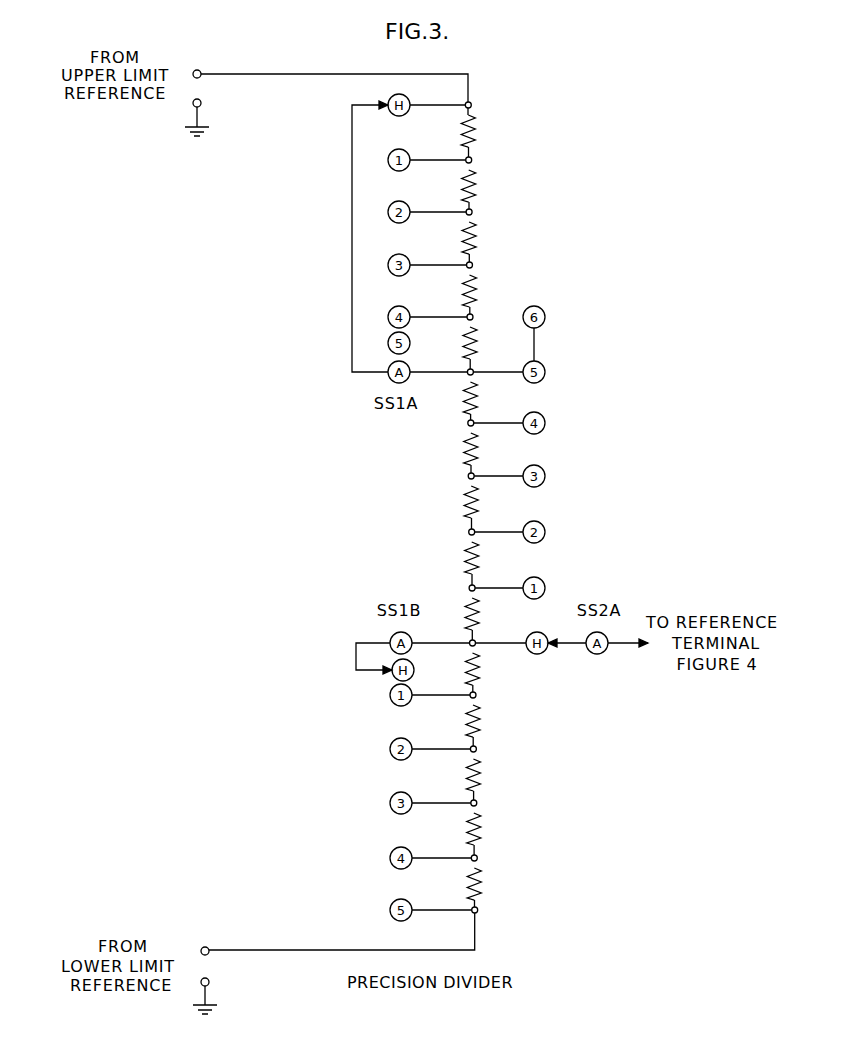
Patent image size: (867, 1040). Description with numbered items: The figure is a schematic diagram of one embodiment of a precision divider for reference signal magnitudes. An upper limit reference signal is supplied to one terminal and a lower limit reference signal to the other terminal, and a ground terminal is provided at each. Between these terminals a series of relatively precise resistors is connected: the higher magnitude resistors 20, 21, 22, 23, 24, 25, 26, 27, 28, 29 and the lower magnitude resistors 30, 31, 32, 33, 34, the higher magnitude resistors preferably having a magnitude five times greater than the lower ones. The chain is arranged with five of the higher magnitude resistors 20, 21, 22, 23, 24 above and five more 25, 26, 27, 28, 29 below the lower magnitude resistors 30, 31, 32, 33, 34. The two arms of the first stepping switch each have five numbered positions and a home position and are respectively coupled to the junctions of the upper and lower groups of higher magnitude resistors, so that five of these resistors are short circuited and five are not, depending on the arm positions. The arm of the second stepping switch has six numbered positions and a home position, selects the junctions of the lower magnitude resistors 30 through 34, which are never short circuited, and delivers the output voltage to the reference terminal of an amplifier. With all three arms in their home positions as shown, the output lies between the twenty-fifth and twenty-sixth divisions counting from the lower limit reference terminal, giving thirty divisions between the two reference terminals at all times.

The precision resistor 20 is at (483, 131).
The precision resistor 21 is at (484, 186).
The precision resistor 22 is at (484, 238).
The precision resistor 23 is at (485, 291).
The precision resistor 24 is at (485, 343).
The precision resistor 25 is at (488, 669).
The precision resistor 26 is at (488, 721).
The precision resistor 27 is at (488, 775).
The precision resistor 28 is at (489, 829).
The precision resistor 29 is at (489, 884).
The precision resistor 30 is at (485, 398).
The precision resistor 31 is at (486, 449).
The precision resistor 32 is at (486, 502).
The precision resistor 33 is at (487, 558).
The precision resistor 34 is at (487, 614).